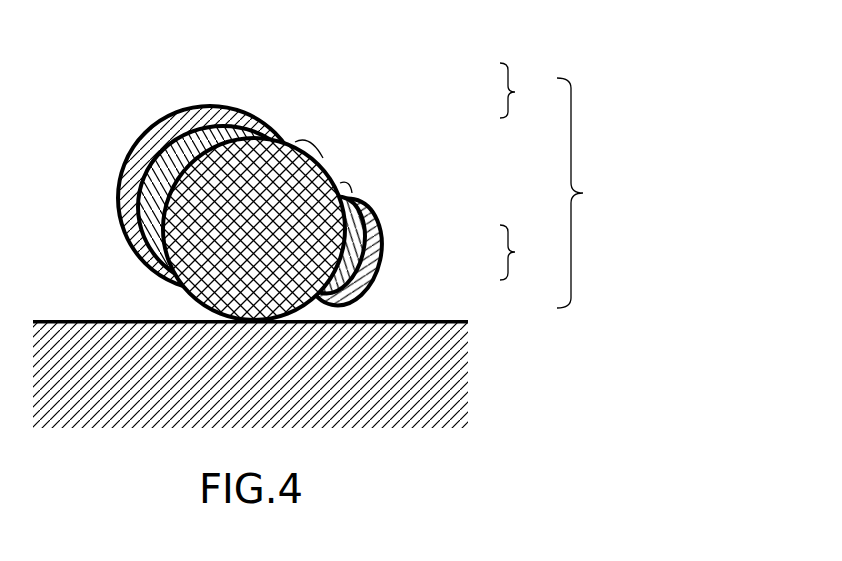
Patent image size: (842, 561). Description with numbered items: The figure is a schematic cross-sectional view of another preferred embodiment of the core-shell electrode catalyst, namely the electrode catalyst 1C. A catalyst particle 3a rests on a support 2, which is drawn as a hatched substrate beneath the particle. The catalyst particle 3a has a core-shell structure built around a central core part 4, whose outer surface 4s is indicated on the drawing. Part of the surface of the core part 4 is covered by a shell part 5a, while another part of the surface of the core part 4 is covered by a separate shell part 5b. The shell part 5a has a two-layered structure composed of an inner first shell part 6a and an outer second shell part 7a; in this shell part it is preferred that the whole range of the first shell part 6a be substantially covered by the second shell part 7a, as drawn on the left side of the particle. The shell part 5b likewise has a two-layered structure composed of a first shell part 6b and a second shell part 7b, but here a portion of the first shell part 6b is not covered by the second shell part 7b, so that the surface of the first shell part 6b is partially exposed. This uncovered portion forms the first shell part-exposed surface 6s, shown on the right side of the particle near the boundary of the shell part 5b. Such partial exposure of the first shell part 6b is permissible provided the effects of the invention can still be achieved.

The electrode catalyst 1C is at (106, 110).
The support 2 is at (388, 387).
The catalyst particle 3a is at (589, 193).
The core part 4 is at (192, 302).
The surface of core particle 4s is at (323, 158).
The shell part 5a is at (527, 90).
The shell part 5b is at (527, 252).
The first shell part 6a is at (272, 121).
The first shell part 6b is at (378, 229).
The first shell part-exposed surface 6s is at (350, 190).
The second shell part 7a is at (243, 102).
The second shell part 7b is at (382, 253).